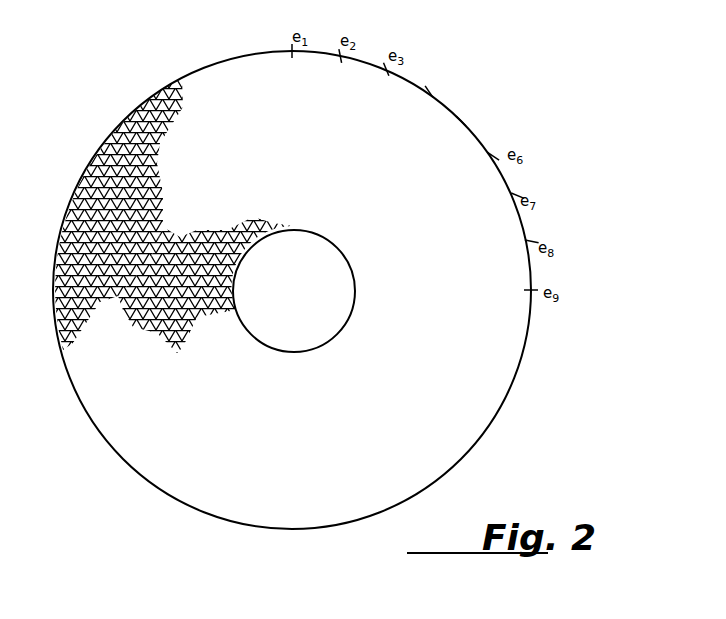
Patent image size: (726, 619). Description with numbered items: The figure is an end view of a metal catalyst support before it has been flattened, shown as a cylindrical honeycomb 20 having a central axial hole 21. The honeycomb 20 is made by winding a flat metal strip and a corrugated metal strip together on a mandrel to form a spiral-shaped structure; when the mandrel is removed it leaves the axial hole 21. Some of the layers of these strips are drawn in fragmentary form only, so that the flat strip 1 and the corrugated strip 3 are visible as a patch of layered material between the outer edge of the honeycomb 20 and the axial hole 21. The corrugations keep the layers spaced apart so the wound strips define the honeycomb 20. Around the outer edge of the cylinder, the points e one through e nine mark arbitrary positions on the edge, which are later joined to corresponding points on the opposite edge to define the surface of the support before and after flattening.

The flat strip 1 is at (157, 140).
The corrugated strip 3 is at (227, 217).
The honeycomb 20 is at (517, 369).
The axial hole 21 is at (335, 270).